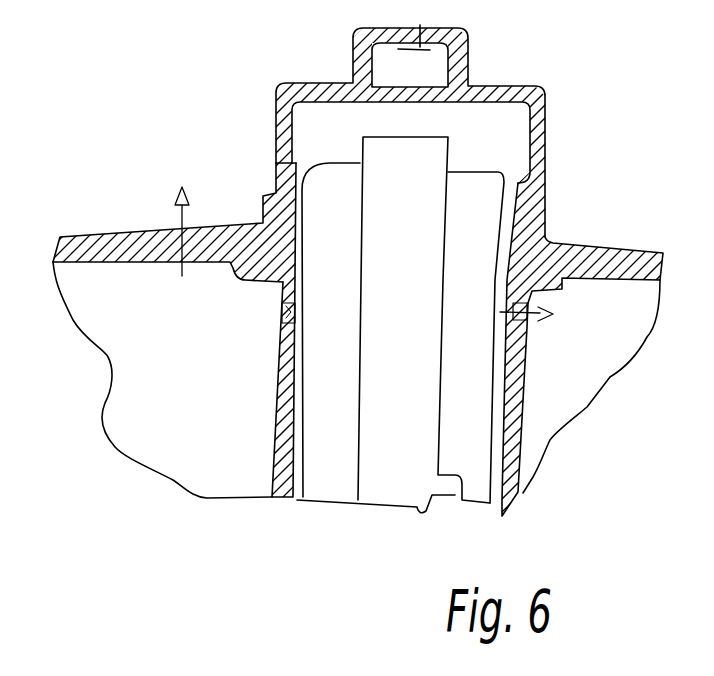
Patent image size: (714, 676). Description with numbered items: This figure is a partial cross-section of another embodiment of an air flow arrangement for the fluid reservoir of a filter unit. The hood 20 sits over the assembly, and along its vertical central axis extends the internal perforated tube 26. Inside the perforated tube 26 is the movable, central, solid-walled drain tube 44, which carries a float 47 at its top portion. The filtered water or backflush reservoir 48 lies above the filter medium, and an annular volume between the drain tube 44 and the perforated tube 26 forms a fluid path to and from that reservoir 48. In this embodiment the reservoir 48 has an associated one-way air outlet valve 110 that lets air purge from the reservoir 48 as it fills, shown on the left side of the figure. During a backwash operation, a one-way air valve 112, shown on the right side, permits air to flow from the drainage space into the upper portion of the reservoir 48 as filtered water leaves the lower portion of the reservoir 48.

The hood 20 is at (80, 240).
The internal perforated tube 26 is at (275, 383).
The drain tube 44 is at (455, 497).
The float 47 is at (297, 493).
The backflush reservoir 48 is at (213, 457).
The one-way air outlet valve 110 is at (170, 232).
The one-way air valve 112 is at (543, 233).